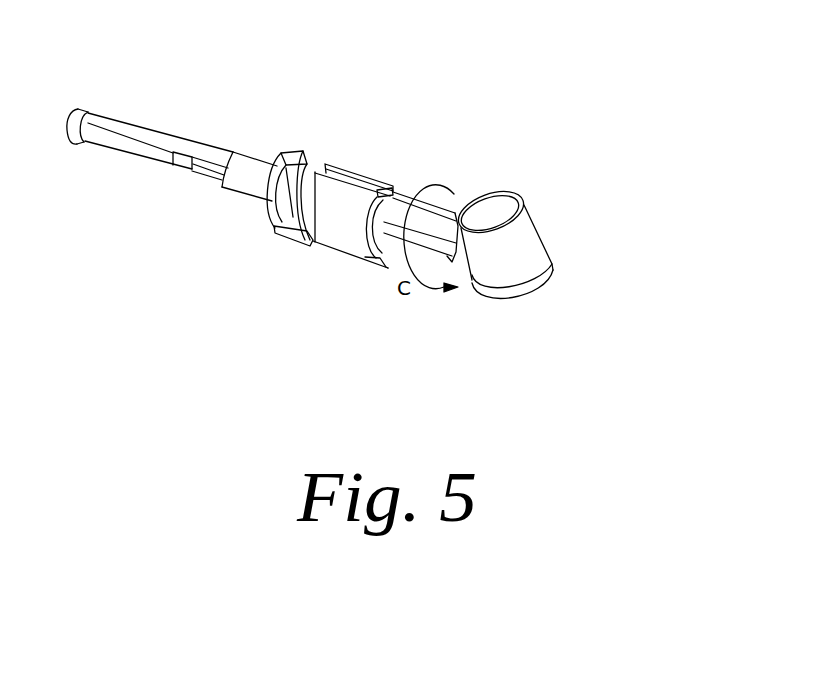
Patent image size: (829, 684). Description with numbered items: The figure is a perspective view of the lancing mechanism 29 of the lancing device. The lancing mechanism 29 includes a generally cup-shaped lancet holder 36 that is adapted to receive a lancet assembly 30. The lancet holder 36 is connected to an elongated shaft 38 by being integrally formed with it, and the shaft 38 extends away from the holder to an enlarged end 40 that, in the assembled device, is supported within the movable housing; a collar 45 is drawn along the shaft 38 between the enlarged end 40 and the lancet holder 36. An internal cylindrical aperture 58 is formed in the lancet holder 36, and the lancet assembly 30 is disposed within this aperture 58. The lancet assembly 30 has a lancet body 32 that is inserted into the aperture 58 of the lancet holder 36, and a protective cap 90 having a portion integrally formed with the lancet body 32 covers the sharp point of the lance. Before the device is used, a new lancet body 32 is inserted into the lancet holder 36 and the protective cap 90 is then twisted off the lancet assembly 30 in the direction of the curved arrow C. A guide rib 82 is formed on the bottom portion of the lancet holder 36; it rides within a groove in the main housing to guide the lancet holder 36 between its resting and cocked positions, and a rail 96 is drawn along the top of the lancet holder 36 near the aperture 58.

The lancing mechanism 29 is at (409, 196).
The lancet assembly 30 is at (537, 223).
The lancet body 32 is at (447, 240).
The lancet holder 36 is at (406, 171).
The elongated shaft 38 is at (133, 132).
The enlarged end 40 is at (76, 142).
The collar 45 is at (243, 187).
The internal cylindrical aperture 58 is at (413, 194).
The guide rib 82 is at (288, 152).
The protective cap 90 is at (537, 221).
The guide rail 96 is at (359, 175).